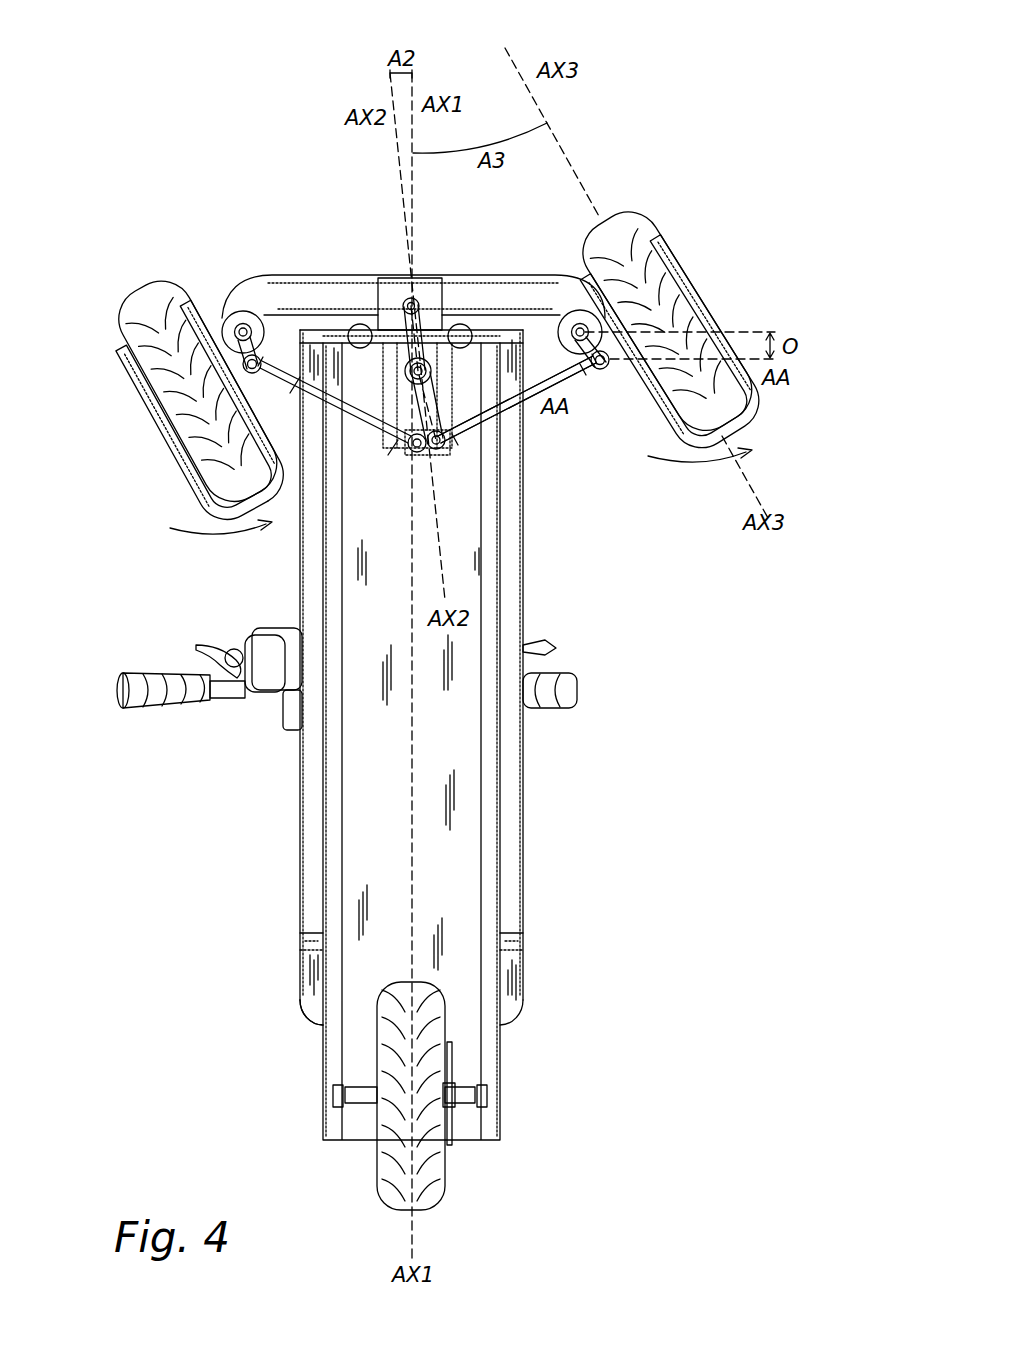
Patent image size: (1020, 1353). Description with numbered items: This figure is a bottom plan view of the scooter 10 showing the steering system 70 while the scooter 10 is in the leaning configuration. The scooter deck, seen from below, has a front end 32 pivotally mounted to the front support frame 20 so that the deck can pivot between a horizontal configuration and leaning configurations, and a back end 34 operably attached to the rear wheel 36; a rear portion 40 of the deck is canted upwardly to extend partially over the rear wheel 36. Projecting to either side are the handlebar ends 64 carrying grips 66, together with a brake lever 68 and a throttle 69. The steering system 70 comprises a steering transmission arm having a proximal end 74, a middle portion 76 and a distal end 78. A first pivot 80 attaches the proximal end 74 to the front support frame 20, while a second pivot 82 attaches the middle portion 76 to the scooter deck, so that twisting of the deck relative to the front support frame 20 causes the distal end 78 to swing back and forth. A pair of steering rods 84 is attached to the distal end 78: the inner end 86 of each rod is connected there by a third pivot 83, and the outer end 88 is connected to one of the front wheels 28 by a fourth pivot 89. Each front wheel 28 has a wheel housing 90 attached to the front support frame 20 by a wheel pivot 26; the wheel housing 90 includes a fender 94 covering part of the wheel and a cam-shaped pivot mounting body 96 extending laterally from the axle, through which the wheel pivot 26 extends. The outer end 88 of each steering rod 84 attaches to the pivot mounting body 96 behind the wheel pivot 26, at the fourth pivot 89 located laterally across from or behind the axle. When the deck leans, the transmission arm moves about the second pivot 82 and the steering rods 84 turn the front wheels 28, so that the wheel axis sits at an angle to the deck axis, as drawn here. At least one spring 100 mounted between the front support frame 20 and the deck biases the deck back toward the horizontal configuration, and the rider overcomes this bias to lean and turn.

The scooter 10 is at (197, 184).
The front support frame 20 is at (322, 273).
The wheel pivot 26 is at (243, 325).
The front wheel 28 is at (435, 349).
The front end 32 is at (312, 330).
The back end 34 is at (300, 930).
The rear wheel 36 is at (440, 1175).
The rear portion 40 is at (305, 1005).
The ends 64 is at (366, 725).
The grips 66 is at (560, 706).
The brake lever 68 is at (555, 642).
The throttle 69 is at (200, 650).
The steering system 70 is at (218, 562).
The proximal end 74 is at (426, 362).
The middle portion 76 is at (443, 314).
The distal end 78 is at (325, 392).
The first pivot 80 is at (419, 312).
The second pivot 82 is at (445, 446).
The third pivot 83 is at (413, 453).
The steering rods 84 is at (340, 414).
The inner end 86 is at (392, 440).
The outer end 88 is at (259, 372).
The fourth pivot 89 is at (236, 327).
The wheel housing 90 is at (122, 550).
The fender 94 is at (153, 420).
The pivot mounting body 96 is at (229, 308).
The spring 100 is at (364, 324).